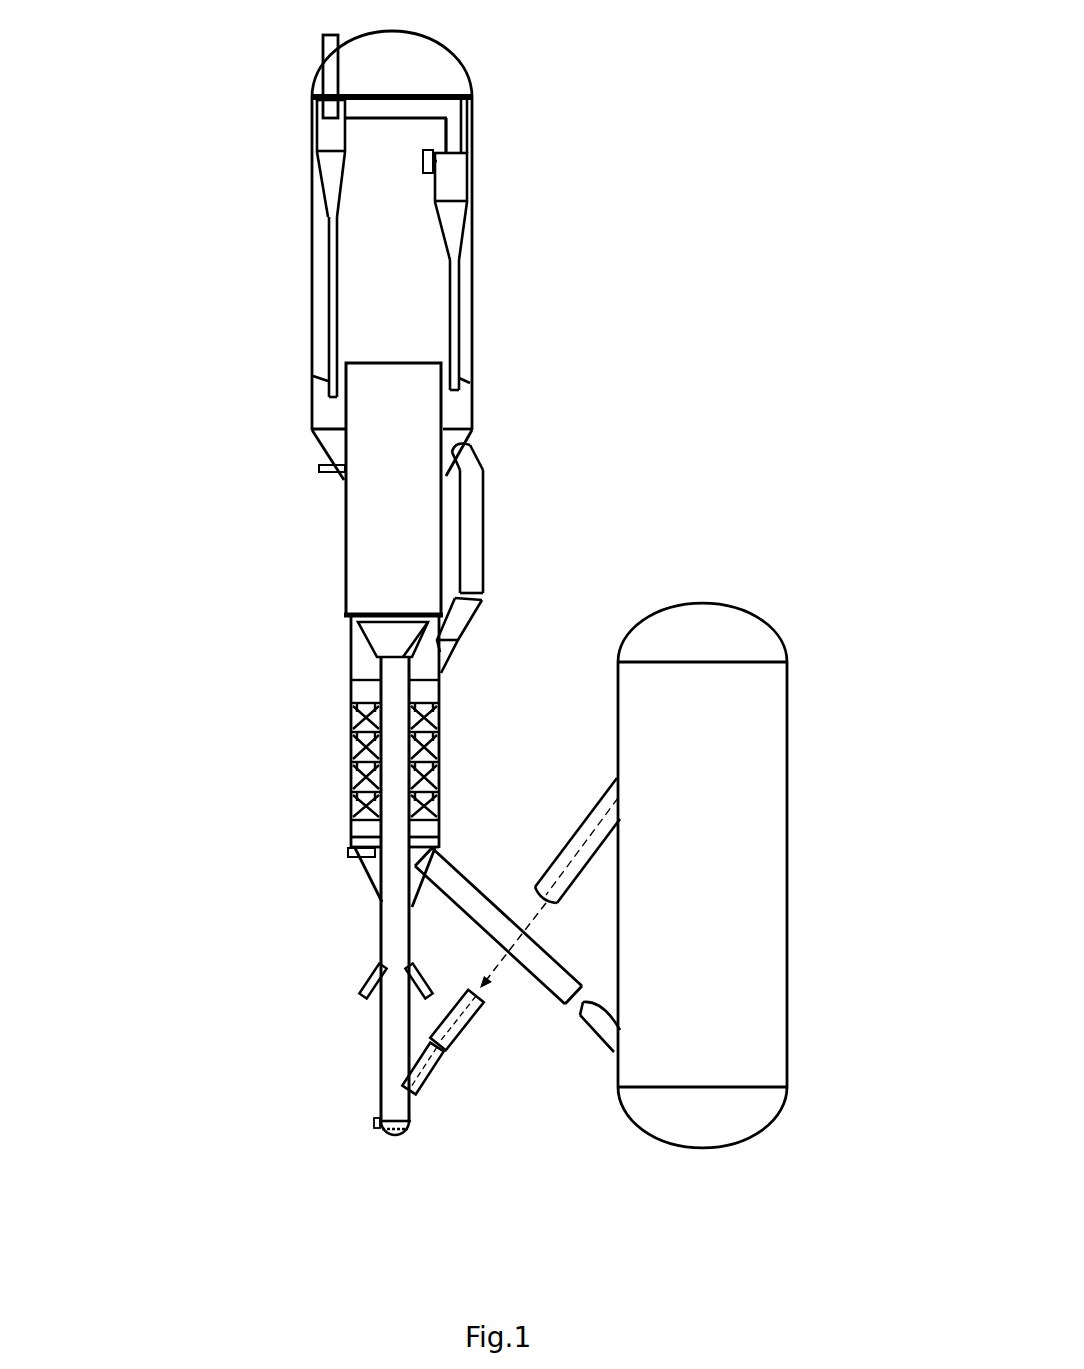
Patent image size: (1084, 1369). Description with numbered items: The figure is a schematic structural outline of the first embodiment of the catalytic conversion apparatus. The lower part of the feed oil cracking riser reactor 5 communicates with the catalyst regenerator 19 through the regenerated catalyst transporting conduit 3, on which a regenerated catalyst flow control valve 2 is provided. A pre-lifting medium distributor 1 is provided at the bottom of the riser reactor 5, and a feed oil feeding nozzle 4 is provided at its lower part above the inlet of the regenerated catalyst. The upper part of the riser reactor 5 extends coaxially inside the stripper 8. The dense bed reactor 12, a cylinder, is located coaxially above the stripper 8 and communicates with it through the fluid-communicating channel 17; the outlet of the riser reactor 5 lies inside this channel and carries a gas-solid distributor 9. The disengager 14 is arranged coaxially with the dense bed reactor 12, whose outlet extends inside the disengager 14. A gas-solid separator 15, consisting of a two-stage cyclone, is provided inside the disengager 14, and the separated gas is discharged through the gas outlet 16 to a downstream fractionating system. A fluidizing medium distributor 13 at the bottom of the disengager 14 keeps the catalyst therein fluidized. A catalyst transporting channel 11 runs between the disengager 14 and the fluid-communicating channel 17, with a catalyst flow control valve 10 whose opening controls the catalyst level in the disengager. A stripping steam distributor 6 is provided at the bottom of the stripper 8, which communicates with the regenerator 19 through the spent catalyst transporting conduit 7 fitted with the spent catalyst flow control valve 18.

The pre-lifting medium distributor 1 is at (411, 1152).
The regenerated catalyst flow control valve 2 is at (454, 1094).
The first transporting conduit 3 is at (471, 1043).
The feed oil feeding nozzle 4 is at (410, 993).
The first feed oil cracking riser reactor 5 is at (355, 889).
The stripping steam distributor 6 is at (332, 870).
The spent catalyst transporting conduit 7 is at (498, 907).
The stripper 8 is at (419, 750).
The gas-solid distributor 9 is at (423, 660).
The catalyst flow control valve 10 is at (511, 597).
The catalyst transporting channel 11 is at (499, 518).
The dense bed reactor 12 is at (329, 489).
The fluidizing medium distributor 13 is at (291, 433).
The disengager 14 is at (425, 255).
The gas-solid separator 15 is at (440, 170).
The gas outlet 16 is at (305, 60).
The fluid-communicating channel 17 is at (327, 733).
The spent catalyst flow control valve 18 is at (550, 915).
The regenerator 19 is at (702, 875).